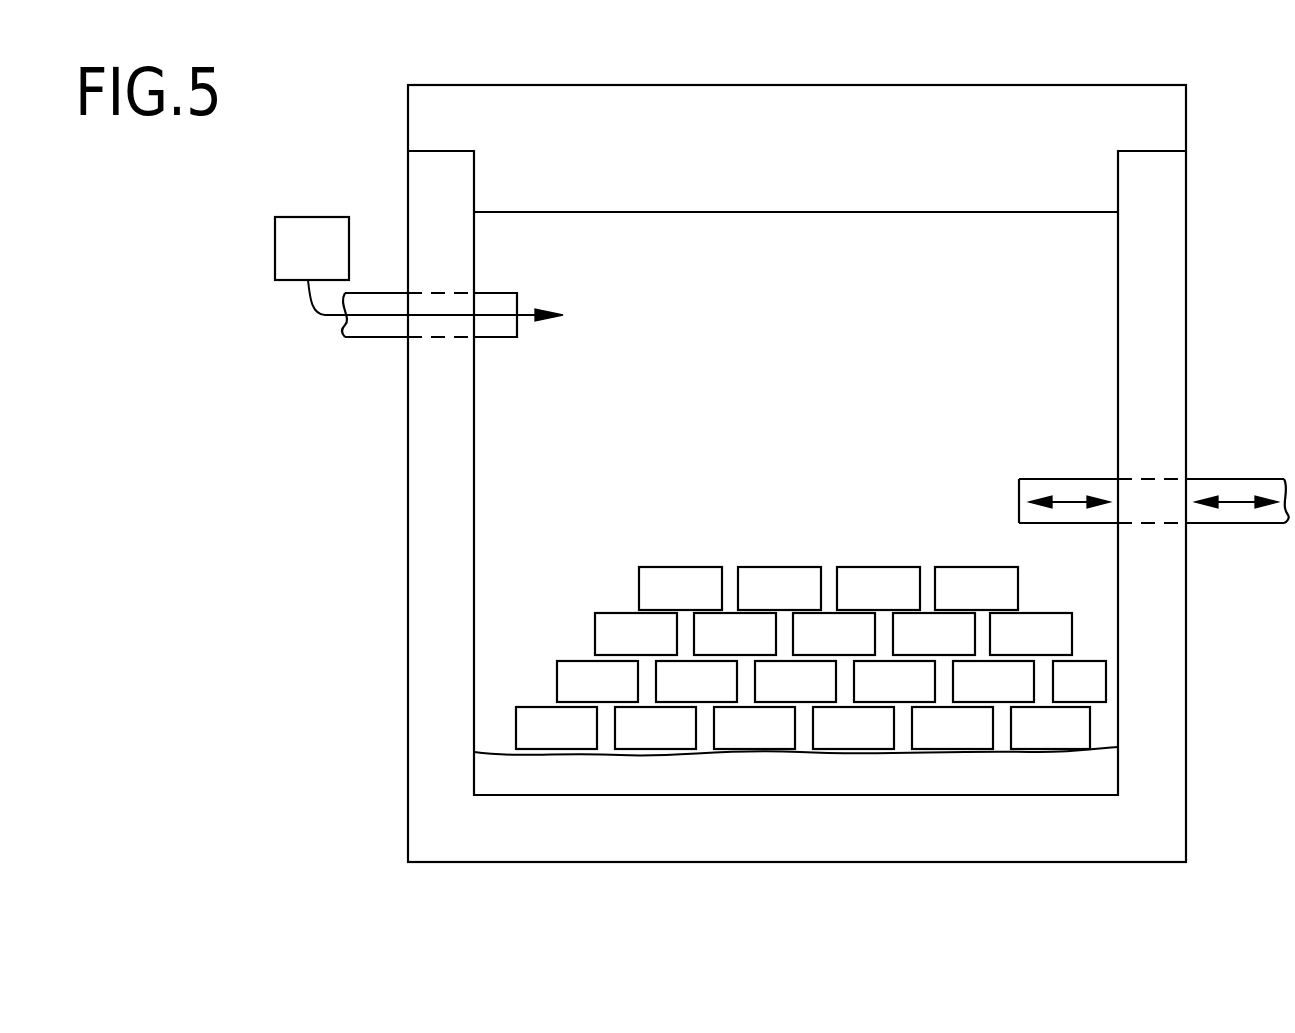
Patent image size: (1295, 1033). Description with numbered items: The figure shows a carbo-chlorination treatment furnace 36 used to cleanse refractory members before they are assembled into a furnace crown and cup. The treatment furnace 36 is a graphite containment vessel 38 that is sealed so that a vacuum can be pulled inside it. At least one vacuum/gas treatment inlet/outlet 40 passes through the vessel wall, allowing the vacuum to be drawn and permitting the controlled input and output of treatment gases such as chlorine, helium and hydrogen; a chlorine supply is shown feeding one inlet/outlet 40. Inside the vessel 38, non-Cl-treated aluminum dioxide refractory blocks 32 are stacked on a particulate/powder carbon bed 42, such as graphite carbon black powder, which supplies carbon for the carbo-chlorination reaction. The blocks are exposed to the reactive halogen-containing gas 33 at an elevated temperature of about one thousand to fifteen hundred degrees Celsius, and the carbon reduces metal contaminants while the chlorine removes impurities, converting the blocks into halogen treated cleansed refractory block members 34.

The non-Cl-treated aluminum dioxide refractory blocks 32 is at (809, 654).
The reactive halogen-containing gas 33 is at (1040, 292).
The halogen treated cleansed refractory block members 34 is at (1115, 640).
The carbo-chlorination treatment furnace 36 is at (736, 505).
The graphite containment vessel 38 is at (1140, 116).
The vacuum/gas treatment inlet/outlet 40 is at (378, 290).
The particulate/powder carbon bed 42 is at (1048, 777).